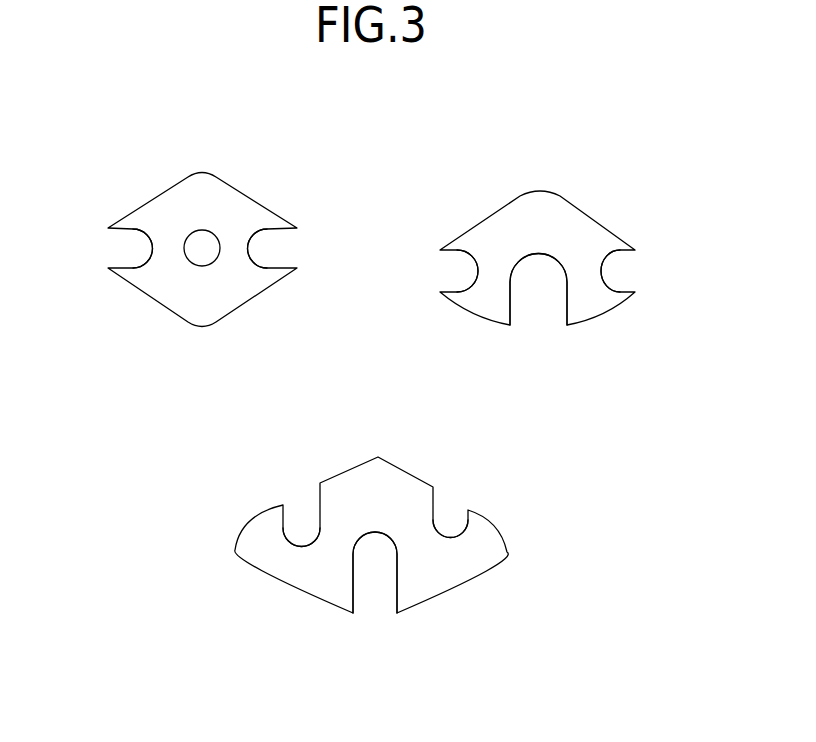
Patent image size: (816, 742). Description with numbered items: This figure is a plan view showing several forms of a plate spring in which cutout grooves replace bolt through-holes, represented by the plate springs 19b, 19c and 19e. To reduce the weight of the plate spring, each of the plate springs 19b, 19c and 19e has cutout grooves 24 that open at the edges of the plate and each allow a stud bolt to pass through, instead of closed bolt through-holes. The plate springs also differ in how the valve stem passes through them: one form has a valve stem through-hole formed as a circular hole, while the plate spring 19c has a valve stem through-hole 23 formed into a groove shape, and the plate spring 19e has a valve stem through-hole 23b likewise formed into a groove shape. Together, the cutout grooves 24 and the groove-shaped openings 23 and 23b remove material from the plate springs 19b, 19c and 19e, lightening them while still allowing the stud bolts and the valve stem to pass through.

The plate spring 19b is at (202, 170).
The plate spring 19c is at (548, 190).
The plate spring 19e is at (417, 470).
The valve stem through-hole 23 is at (515, 295).
The valve stem through-hole 23b is at (353, 580).
The cutout groove 24 is at (137, 233).